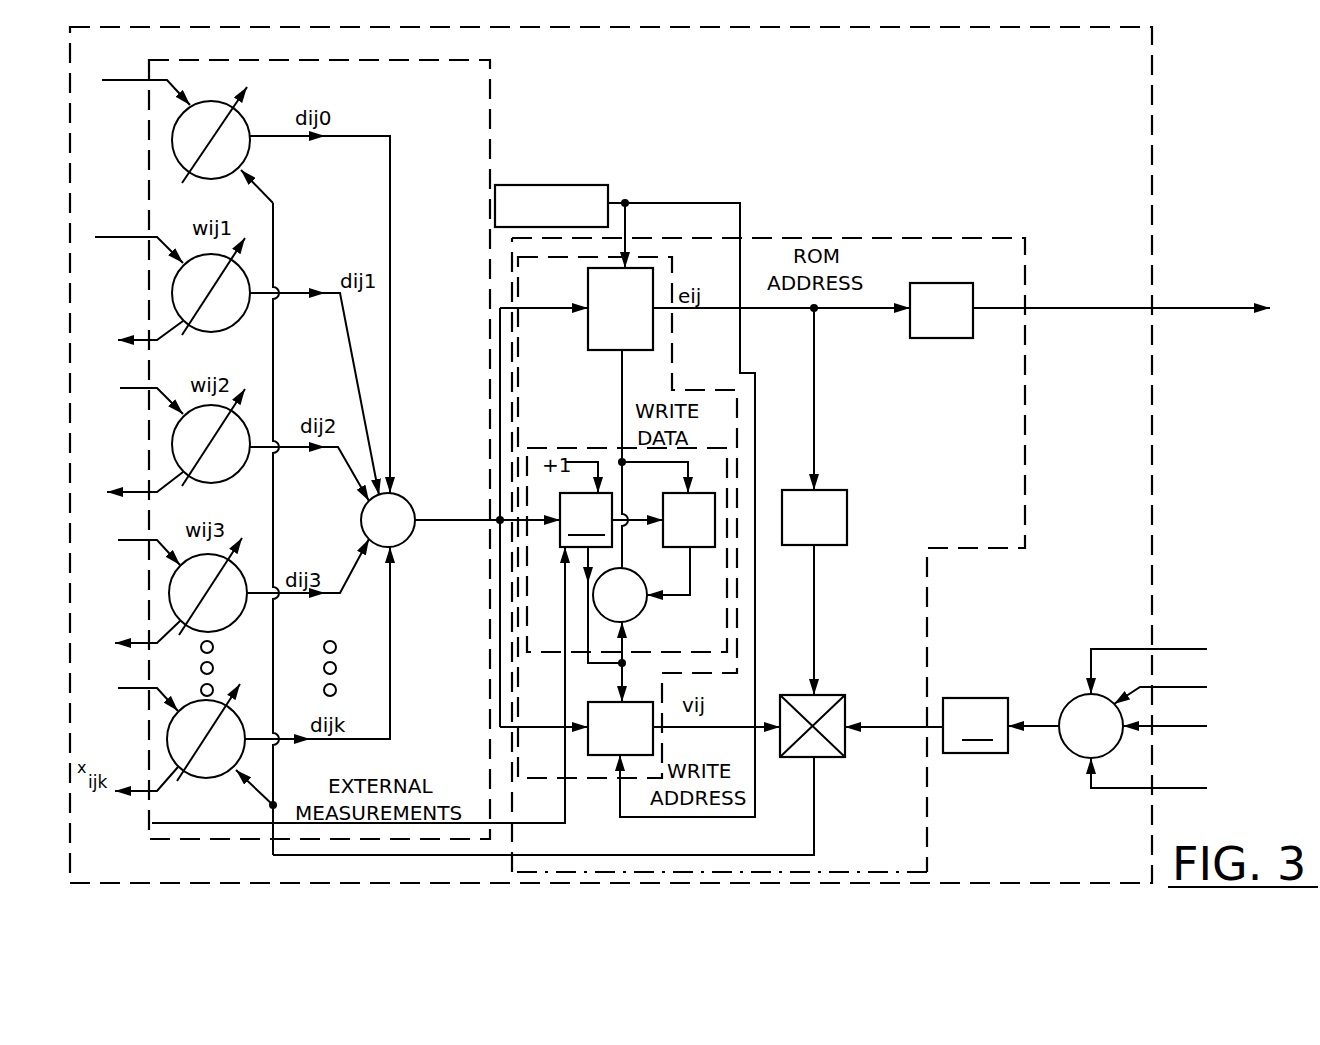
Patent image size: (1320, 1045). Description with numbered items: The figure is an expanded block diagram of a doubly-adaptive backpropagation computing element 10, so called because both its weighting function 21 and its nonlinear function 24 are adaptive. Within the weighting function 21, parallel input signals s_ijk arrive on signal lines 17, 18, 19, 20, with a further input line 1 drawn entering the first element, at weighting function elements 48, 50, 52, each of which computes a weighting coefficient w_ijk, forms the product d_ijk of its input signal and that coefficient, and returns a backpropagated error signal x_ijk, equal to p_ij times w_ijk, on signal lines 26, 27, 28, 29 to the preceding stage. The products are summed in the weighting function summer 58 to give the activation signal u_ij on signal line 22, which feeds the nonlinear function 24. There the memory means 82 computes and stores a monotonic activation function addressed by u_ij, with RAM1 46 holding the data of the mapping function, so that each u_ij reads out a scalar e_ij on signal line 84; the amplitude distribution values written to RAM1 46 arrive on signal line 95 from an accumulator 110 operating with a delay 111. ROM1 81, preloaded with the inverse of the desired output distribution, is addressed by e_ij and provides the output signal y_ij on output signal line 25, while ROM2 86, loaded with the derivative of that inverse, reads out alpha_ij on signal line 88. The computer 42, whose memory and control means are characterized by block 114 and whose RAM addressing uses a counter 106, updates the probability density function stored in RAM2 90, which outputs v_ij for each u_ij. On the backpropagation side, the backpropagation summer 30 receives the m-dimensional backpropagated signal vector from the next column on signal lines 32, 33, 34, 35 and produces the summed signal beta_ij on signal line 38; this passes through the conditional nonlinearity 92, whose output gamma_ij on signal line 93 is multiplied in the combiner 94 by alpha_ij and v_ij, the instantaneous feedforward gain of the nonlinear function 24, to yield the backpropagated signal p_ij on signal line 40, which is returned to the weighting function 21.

The computing element 10 is at (1032, 213).
The weighting function 21 is at (345, 223).
The nonlinear function 24 is at (944, 530).
The memory means 82 is at (582, 442).
The input line 1 is at (150, 83).
The weighting function element 48 is at (228, 131).
The weighting function element 50 is at (230, 285).
The weighting function element 52 is at (244, 420).
The signal line 17 is at (138, 238).
The signal line 18 is at (132, 390).
The signal line 19 is at (130, 542).
The signal line 20 is at (132, 690).
The signal line 26 is at (135, 340).
The signal line 27 is at (140, 492).
The signal line 28 is at (143, 643).
The signal line 29 is at (150, 792).
The weighting function summer 58 is at (360, 521).
The signal line 22 is at (534, 308).
The counter 106 is at (608, 197).
The RAM1 46 is at (632, 348).
The signal line 95 is at (625, 397).
The ROM1 81 is at (944, 283).
The output signal line 25 is at (1130, 308).
The signal line 84 is at (815, 345).
The ROM2 86 is at (795, 490).
The signal line 88 is at (813, 637).
The memory and control means 114 is at (586, 520).
The delay 111 is at (678, 495).
The accumulator 110 is at (680, 574).
The computer 42 is at (683, 638).
The RAM2 90 is at (592, 704).
The combiner 94 is at (825, 758).
The signal line 93 is at (913, 727).
The conditional nonlinearity 92 is at (975, 725).
The signal line 38 is at (1052, 728).
The backpropagation summer 30 is at (1072, 755).
The signal line 32 is at (1185, 660).
The signal line 33 is at (1196, 685).
The signal line 34 is at (1195, 722).
The signal line 35 is at (1185, 779).
The signal line 40 is at (737, 855).